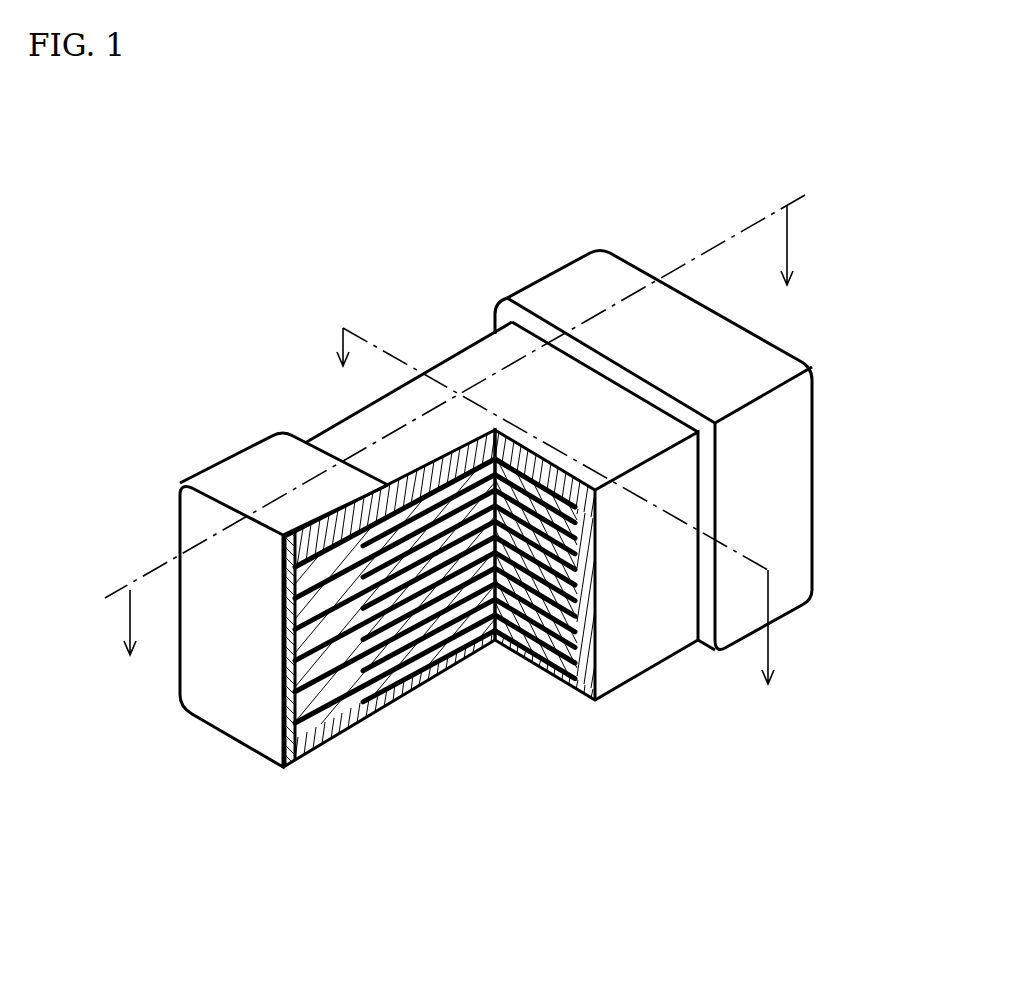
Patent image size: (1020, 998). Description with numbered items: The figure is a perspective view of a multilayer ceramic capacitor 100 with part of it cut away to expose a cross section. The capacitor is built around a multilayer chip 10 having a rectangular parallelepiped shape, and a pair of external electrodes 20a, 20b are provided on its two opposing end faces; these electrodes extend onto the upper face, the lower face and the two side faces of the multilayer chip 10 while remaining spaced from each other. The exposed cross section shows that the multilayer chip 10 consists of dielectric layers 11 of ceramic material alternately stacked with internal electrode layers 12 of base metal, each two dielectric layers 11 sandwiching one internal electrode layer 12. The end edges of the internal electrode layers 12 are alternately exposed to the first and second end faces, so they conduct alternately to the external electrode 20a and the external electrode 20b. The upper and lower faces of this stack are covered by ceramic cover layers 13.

The multilayer ceramic capacitor 100 is at (927, 182).
The multilayer chip 10 is at (325, 419).
The dielectric layer 11 is at (421, 634).
The internal electrode layer 12 is at (387, 663).
The cover layer 13 is at (468, 373).
The external electrode 20a is at (222, 462).
The external electrode 20b is at (553, 293).